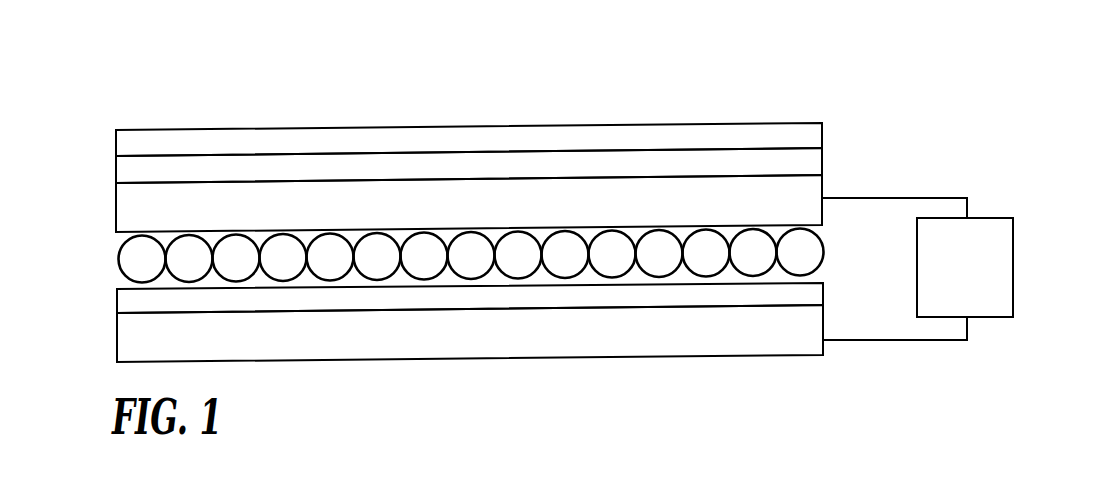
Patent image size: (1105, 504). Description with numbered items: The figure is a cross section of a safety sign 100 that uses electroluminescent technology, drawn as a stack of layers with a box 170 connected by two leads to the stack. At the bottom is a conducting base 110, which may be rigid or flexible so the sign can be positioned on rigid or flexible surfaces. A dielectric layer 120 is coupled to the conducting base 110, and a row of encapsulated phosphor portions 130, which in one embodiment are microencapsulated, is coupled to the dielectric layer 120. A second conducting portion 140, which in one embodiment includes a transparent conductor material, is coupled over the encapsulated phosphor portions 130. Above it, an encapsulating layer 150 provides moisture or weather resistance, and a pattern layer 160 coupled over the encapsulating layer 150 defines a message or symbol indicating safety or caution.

The safety sign 100 is at (885, 56).
The conducting base 110 is at (780, 342).
The dielectric layer 120 is at (802, 295).
The encapsulated phosphor portions 130 is at (815, 250).
The second conducting portion 140 is at (802, 198).
The encapsulating layer 150 is at (778, 163).
The pattern layer 160 is at (578, 138).
The power supply 170 is at (997, 263).